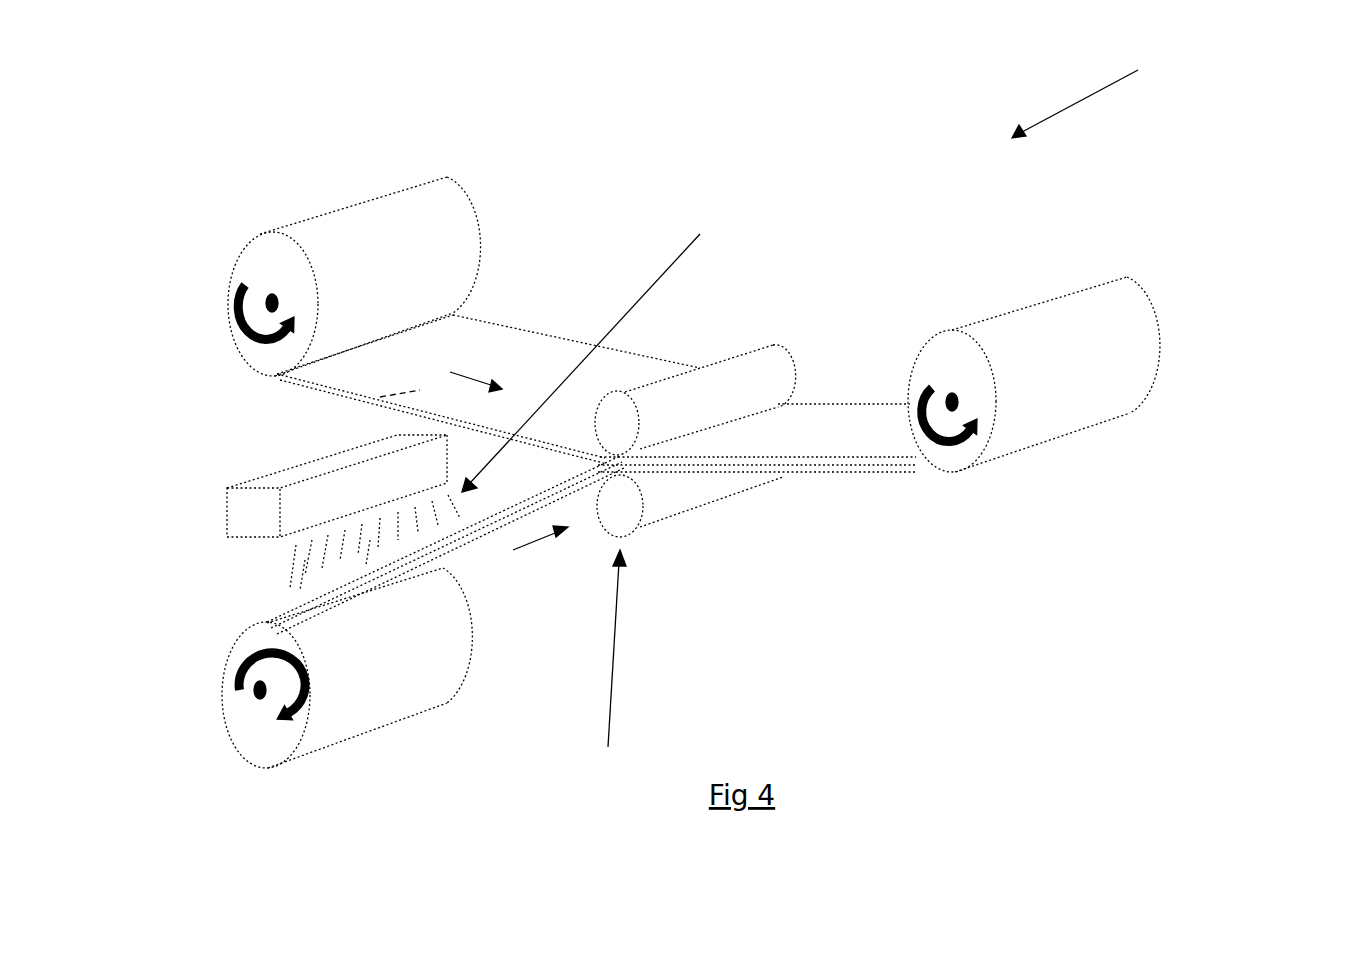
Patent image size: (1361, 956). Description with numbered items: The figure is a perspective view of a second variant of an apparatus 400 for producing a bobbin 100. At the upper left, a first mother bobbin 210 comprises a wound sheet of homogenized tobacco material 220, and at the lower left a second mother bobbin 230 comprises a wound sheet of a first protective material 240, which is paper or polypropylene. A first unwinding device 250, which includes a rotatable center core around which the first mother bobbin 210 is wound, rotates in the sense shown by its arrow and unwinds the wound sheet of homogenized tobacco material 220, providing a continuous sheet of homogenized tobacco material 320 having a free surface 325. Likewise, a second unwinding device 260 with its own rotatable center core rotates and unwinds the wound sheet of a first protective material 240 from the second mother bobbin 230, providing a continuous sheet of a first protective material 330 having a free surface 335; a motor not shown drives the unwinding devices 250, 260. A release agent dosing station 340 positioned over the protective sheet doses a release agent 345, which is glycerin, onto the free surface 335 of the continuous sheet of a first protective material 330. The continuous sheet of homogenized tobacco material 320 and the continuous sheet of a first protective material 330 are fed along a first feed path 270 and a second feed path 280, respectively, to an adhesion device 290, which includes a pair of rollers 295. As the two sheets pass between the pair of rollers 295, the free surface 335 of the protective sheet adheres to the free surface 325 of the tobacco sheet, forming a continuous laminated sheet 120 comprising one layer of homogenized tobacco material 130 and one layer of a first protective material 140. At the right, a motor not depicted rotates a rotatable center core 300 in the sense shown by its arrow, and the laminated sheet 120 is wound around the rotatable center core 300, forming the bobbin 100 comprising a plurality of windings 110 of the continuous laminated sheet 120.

The bobbin 100 is at (1137, 325).
The windings 110 is at (952, 455).
The continuous laminated sheet 120 is at (765, 428).
The layer of homogenized tobacco material 130 is at (853, 463).
The layer of a first protective material 140 is at (810, 468).
The first mother bobbin 210 is at (362, 215).
The wound sheet of homogenized tobacco material 220 is at (293, 262).
The second mother bobbin 230 is at (340, 695).
The wound sheet of a first protective material 240 is at (270, 742).
The first unwinding device 250 is at (266, 302).
The second unwinding device 260 is at (250, 690).
The first feed path 270 is at (461, 368).
The second feed path 280 is at (521, 549).
The adhesion device 290 is at (634, 671).
The pair of rollers 295 is at (618, 425).
The rotatable center core 300 is at (955, 403).
The continuous sheet of homogenized tobacco material 320 is at (475, 343).
The free surface 325 is at (372, 403).
The continuous sheet of a first protective material 330 is at (310, 602).
The free surface 335 is at (413, 553).
The release agent dosing station 340 is at (300, 493).
The release agent 345 is at (604, 346).
The apparatus 400 is at (1118, 88).